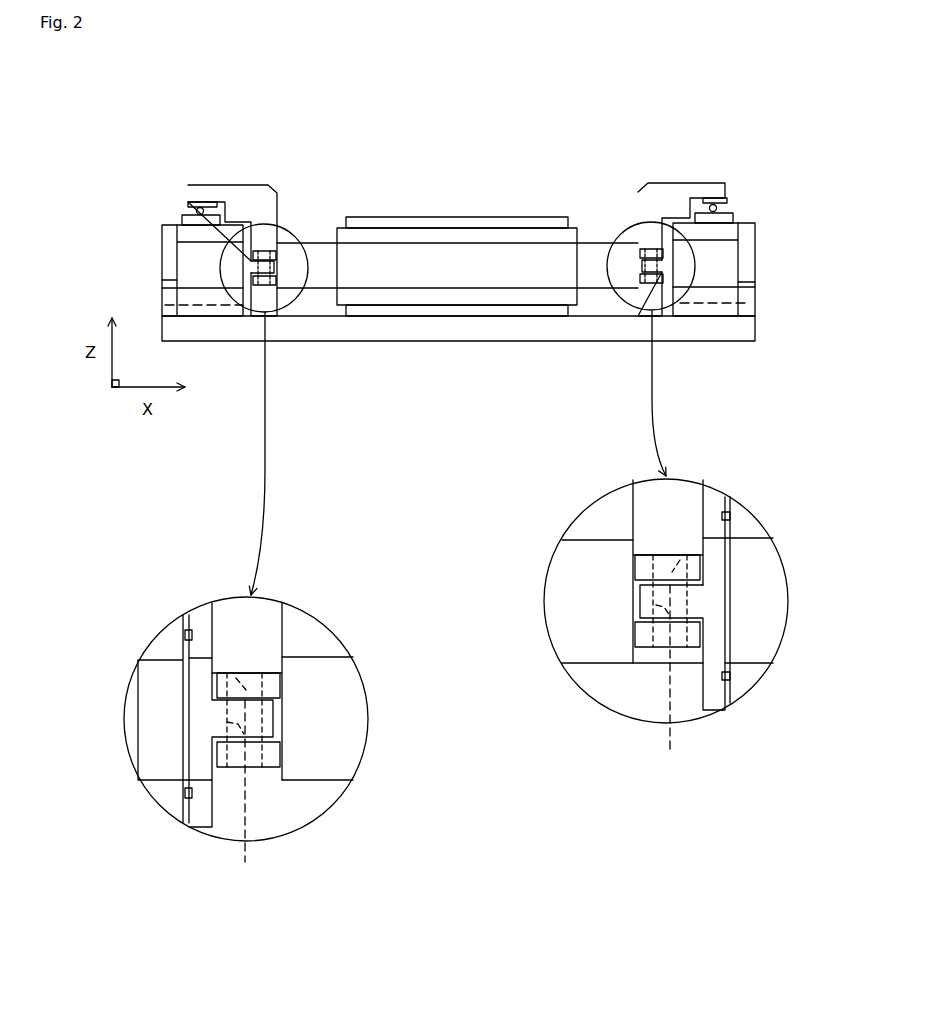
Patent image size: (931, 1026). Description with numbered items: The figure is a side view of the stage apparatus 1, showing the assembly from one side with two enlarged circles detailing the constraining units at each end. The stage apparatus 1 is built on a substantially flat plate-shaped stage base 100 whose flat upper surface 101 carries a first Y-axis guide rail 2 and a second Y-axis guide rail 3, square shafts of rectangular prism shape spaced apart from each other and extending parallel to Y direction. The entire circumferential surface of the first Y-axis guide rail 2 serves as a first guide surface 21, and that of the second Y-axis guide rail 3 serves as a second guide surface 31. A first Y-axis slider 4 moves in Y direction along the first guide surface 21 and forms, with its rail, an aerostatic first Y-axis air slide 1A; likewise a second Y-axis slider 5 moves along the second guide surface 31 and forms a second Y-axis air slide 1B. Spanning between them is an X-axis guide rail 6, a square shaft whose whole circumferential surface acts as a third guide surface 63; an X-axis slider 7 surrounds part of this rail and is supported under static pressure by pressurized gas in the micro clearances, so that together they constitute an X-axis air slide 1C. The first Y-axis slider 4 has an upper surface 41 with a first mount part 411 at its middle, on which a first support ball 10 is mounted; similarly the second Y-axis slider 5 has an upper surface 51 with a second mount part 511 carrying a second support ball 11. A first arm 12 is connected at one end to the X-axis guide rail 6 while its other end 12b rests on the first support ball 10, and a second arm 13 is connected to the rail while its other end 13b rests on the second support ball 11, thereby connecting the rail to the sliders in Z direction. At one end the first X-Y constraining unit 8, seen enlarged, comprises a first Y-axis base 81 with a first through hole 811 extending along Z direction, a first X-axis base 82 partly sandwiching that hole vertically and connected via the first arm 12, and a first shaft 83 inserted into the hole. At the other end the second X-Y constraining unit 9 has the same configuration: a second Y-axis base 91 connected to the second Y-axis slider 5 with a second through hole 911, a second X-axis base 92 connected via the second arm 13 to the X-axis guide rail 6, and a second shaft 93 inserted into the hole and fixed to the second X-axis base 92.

The stage apparatus 1 is at (703, 125).
The first Y-axis air slide 1A is at (823, 230).
The second Y-axis air slide 1B is at (90, 232).
The X-axis air slide 1C is at (382, 122).
The first Y-axis guide rail 2 is at (724, 268).
The first guide surface 21 is at (742, 275).
The second Y-axis guide rail 3 is at (192, 267).
The second guide surface 31 is at (158, 279).
The first Y-axis slider 4 is at (759, 242).
The upper surface 41 is at (745, 222).
The first mount part 411 is at (731, 207).
The second Y-axis slider 5 is at (159, 240).
The upper surface 51 is at (181, 218).
The second mount part 511 is at (185, 211).
The X-axis guide rail 6 is at (323, 241).
The third guide surface 63 is at (311, 242).
The X-axis slider 7 is at (373, 216).
The first X-Y constraining unit 8 is at (671, 551).
The first Y-axis base 81 is at (718, 628).
The first through hole 811 is at (670, 682).
The first X-axis base 82 is at (640, 570).
The first shaft 83 is at (690, 553).
The second X-Y constraining unit 9 is at (244, 667).
The second Y-axis base 91 is at (193, 745).
The second through hole 911 is at (244, 797).
The second X-axis base 92 is at (271, 683).
The second shaft 93 is at (228, 670).
The first support ball 10 is at (728, 193).
The second support ball 11 is at (193, 203).
The first arm 12 is at (662, 181).
The other end 12b is at (713, 190).
The second arm 13 is at (252, 183).
The other end 13b is at (200, 186).
The stage base 100 is at (760, 325).
The upper surface 101 is at (313, 317).